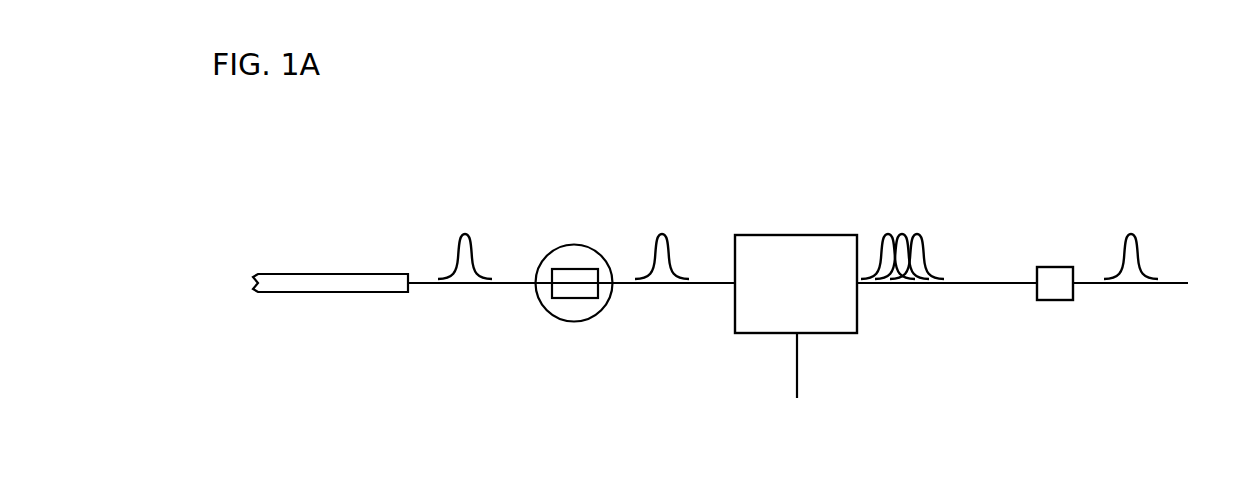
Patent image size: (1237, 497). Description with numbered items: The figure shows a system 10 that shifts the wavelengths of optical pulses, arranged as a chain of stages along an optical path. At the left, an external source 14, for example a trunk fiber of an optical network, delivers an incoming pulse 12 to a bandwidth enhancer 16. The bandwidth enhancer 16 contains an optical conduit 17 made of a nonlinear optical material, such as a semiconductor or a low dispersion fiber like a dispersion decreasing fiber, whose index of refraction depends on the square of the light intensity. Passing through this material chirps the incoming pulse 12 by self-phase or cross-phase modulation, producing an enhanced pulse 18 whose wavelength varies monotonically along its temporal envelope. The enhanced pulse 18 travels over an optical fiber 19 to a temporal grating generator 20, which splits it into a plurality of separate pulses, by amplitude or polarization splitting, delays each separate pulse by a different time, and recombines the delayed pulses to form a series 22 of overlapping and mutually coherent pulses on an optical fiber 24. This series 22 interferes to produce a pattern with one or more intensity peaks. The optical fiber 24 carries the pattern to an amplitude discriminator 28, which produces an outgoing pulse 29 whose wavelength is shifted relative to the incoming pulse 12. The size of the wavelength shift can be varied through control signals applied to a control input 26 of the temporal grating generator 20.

The system 10 is at (670, 138).
The incoming pulse 12 is at (473, 248).
The external source 14 is at (357, 274).
The bandwidth enhancer 16 is at (572, 246).
The optical conduit 17 is at (590, 277).
The enhanced pulse 18 is at (672, 236).
The optical fiber 19 is at (663, 285).
The temporal grating generator 20 is at (796, 284).
The series of overlapping pulses 22 is at (937, 232).
The optical fiber 24 is at (976, 284).
The control input 26 is at (797, 357).
The amplitude discriminator 28 is at (1055, 267).
The outgoing pulse 29 is at (1140, 247).